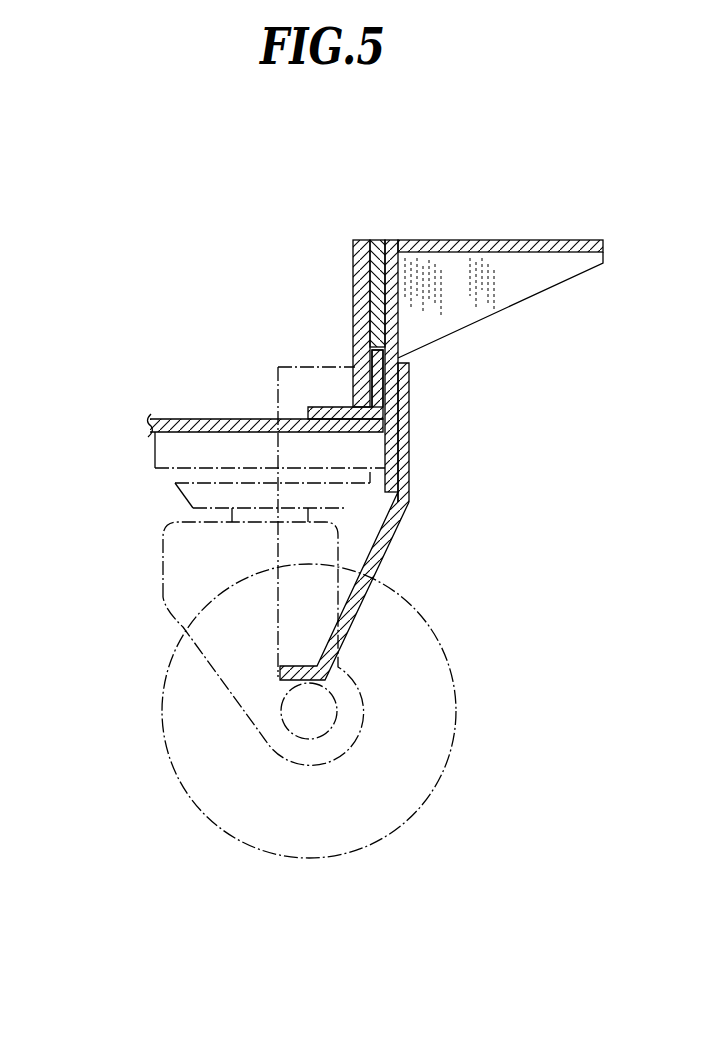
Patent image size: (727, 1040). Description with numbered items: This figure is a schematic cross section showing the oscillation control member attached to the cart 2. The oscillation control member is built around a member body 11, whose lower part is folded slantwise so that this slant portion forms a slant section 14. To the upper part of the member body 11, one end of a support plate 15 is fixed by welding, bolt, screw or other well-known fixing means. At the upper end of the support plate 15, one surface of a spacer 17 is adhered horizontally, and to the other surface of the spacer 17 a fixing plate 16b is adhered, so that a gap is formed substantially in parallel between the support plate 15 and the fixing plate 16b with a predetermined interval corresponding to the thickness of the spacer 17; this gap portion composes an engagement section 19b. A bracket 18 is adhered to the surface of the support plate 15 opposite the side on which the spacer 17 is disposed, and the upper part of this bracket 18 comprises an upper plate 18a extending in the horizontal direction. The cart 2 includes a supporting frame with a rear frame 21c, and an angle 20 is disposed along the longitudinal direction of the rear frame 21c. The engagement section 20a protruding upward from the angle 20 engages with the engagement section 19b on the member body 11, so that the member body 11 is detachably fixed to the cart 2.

The cart 2 is at (166, 446).
The member body 11 is at (345, 303).
The slant section 14 is at (393, 540).
The support plate 15 is at (398, 340).
The fixing plate 16b is at (354, 272).
The spacer 17 is at (421, 322).
The bracket 18 is at (442, 323).
The upper plate 18a is at (483, 241).
The engagement section 19b is at (374, 336).
The angle 20 is at (303, 361).
The engagement section 20a is at (382, 367).
The rear frame 21c is at (203, 432).